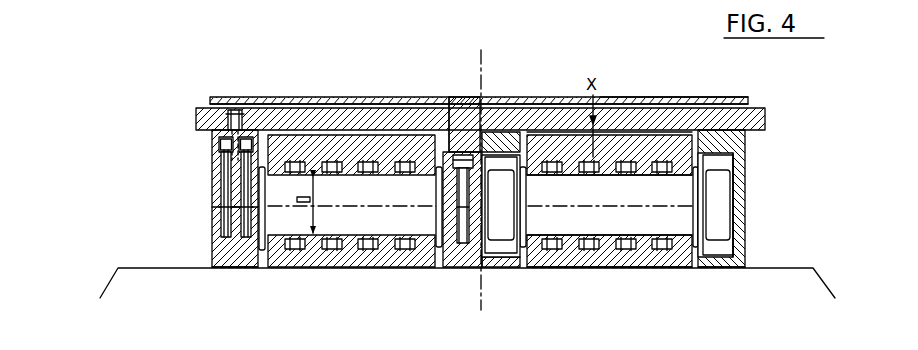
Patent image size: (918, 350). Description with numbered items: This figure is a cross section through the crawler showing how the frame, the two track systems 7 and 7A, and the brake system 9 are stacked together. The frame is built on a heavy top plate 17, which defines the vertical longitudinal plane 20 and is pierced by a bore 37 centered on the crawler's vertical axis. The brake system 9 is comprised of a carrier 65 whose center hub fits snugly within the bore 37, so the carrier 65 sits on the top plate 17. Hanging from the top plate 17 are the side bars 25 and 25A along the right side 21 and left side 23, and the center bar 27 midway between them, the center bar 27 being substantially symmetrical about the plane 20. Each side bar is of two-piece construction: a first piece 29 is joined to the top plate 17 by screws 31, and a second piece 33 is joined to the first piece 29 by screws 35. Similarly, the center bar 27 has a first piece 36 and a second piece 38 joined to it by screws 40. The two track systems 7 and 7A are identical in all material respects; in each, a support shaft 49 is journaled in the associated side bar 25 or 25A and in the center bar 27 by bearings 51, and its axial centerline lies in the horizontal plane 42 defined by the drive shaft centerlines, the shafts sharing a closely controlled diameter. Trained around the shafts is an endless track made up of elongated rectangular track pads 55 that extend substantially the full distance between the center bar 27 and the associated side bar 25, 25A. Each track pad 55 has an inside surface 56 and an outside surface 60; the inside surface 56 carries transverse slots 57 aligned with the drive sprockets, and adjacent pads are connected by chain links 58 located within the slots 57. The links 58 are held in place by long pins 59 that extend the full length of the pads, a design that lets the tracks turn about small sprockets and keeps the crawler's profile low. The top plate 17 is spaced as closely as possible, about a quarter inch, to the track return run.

The carrier 65 is at (226, 96).
The brake system 9 is at (272, 96).
The long pins 59 is at (654, 96).
The top plate 17 is at (766, 120).
The outside surface 60 is at (658, 172).
The screws 31 is at (195, 115).
The left side 23 is at (217, 250).
The side bar 25A is at (212, 184).
The first piece 29 is at (213, 155).
The screws 35 is at (217, 220).
The second piece 33 is at (227, 269).
The track system 7A is at (314, 271).
The track system 7 is at (669, 271).
The transverse slots 57 is at (566, 172).
The chain links 58 is at (597, 247).
The track pads 55 is at (626, 271).
The inside surface 56 is at (585, 177).
The support shafts 49 is at (657, 194).
The horizontal plane 42 is at (397, 205).
The vertical longitudinal plane 20 is at (481, 57).
The second piece 38 is at (452, 269).
The center bar 27 is at (446, 271).
The bore 37 is at (462, 154).
The first piece 36 is at (458, 160).
The screws 40 is at (477, 100).
The bearings 51 is at (497, 249).
The side bar 25 is at (747, 153).
The right side 21 is at (743, 225).